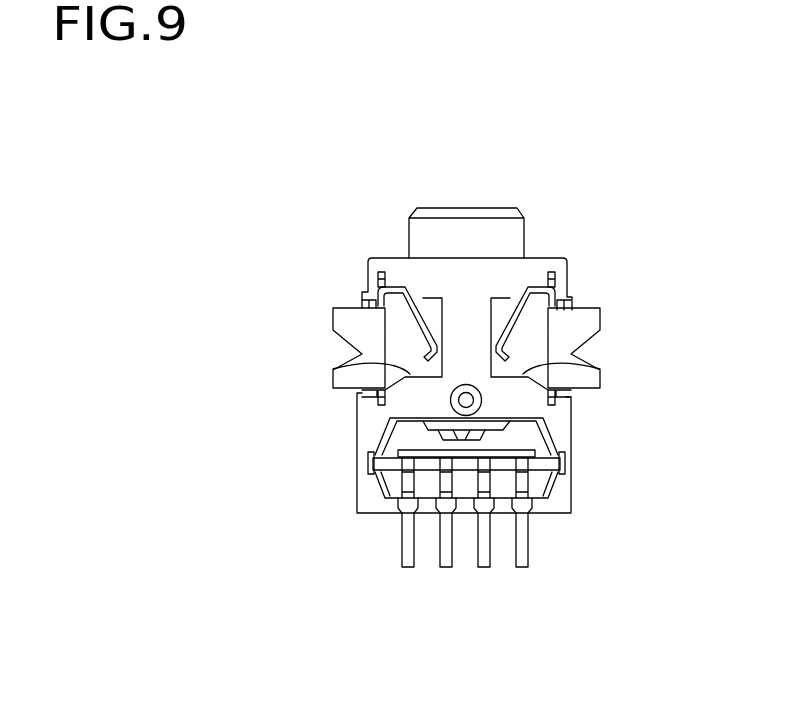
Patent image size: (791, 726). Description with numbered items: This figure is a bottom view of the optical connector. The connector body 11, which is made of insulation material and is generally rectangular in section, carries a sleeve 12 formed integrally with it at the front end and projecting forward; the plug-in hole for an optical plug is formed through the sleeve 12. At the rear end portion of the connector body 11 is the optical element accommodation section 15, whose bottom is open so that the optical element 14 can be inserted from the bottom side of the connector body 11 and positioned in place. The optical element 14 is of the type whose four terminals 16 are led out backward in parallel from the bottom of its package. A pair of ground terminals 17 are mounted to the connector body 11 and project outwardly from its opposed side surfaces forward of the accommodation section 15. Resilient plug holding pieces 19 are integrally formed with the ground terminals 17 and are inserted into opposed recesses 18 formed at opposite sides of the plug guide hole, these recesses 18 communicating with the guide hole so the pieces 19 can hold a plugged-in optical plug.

The connector body 11 is at (385, 258).
The sleeve 12 is at (527, 233).
The optical element 14 is at (408, 438).
The optical element accommodation section 15 is at (533, 432).
The terminals 16 is at (446, 567).
The ground terminals 17 is at (356, 308).
The recesses 18 is at (333, 369).
The plug holding pieces 19 is at (431, 300).